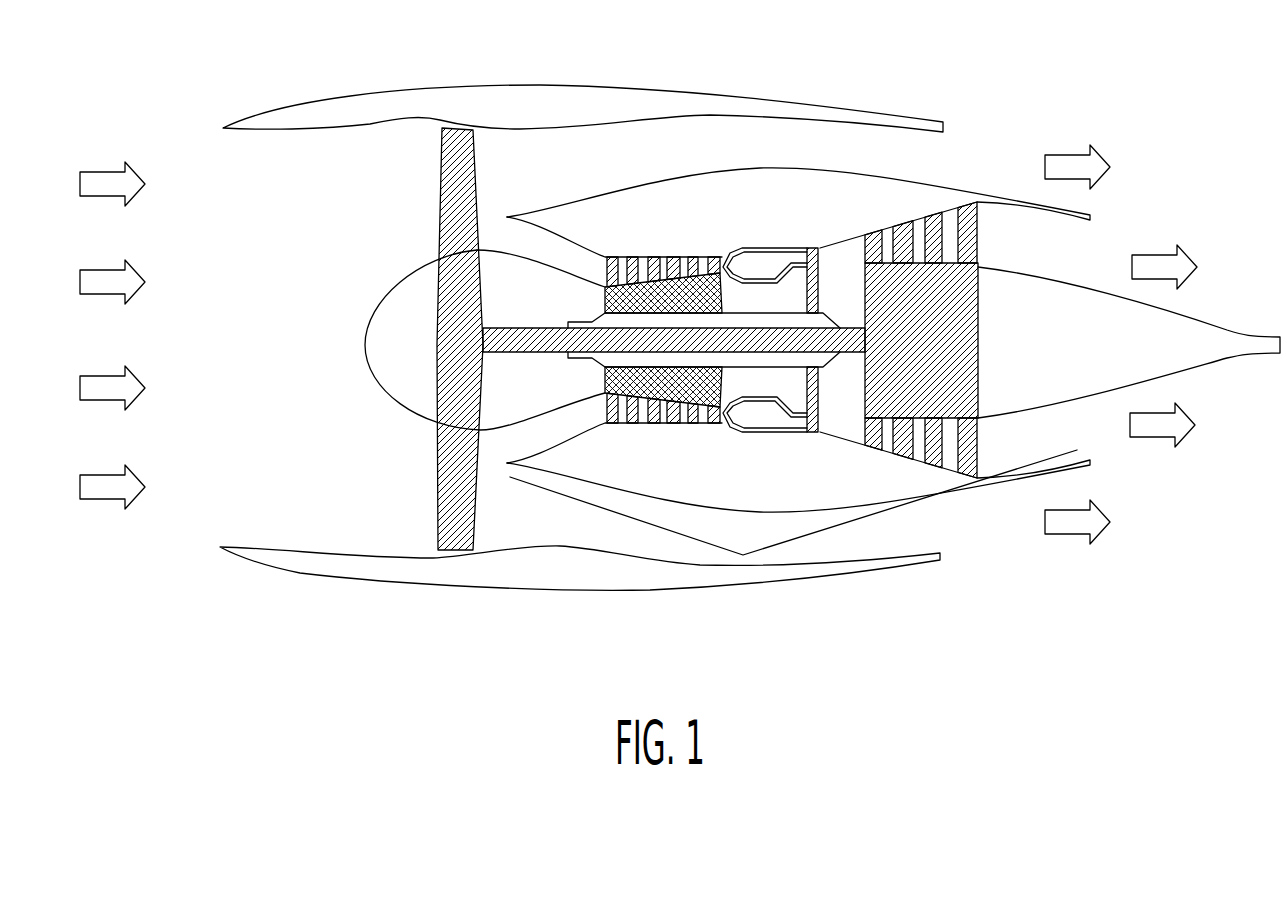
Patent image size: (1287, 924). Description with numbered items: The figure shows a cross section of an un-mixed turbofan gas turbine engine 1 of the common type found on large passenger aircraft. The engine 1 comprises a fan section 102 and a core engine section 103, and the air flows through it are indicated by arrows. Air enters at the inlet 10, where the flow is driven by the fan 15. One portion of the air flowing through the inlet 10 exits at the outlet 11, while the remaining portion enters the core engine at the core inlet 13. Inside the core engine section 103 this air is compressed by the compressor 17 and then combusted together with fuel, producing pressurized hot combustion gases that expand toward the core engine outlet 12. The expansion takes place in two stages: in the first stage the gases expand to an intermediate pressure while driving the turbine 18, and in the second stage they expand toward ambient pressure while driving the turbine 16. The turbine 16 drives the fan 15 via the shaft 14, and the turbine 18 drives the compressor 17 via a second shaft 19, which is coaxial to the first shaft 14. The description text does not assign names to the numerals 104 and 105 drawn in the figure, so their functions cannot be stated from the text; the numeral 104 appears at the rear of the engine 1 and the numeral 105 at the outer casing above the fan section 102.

The engine 1 is at (680, 370).
The inlet 10 is at (250, 350).
The outlet 11 is at (963, 148).
The core engine outlet 12 is at (1100, 249).
The core inlet 13 is at (508, 237).
The shaft 14 is at (535, 325).
The fan 15 is at (448, 192).
The turbine 16 is at (977, 235).
The compressor 17 is at (675, 257).
The turbine 18 is at (812, 248).
The second shaft 19 is at (760, 312).
The fan section 102 is at (406, 339).
The core engine section 103 is at (940, 497).
The exhaust nozzle 104 is at (1207, 340).
The nacelle casing 105 is at (733, 110).